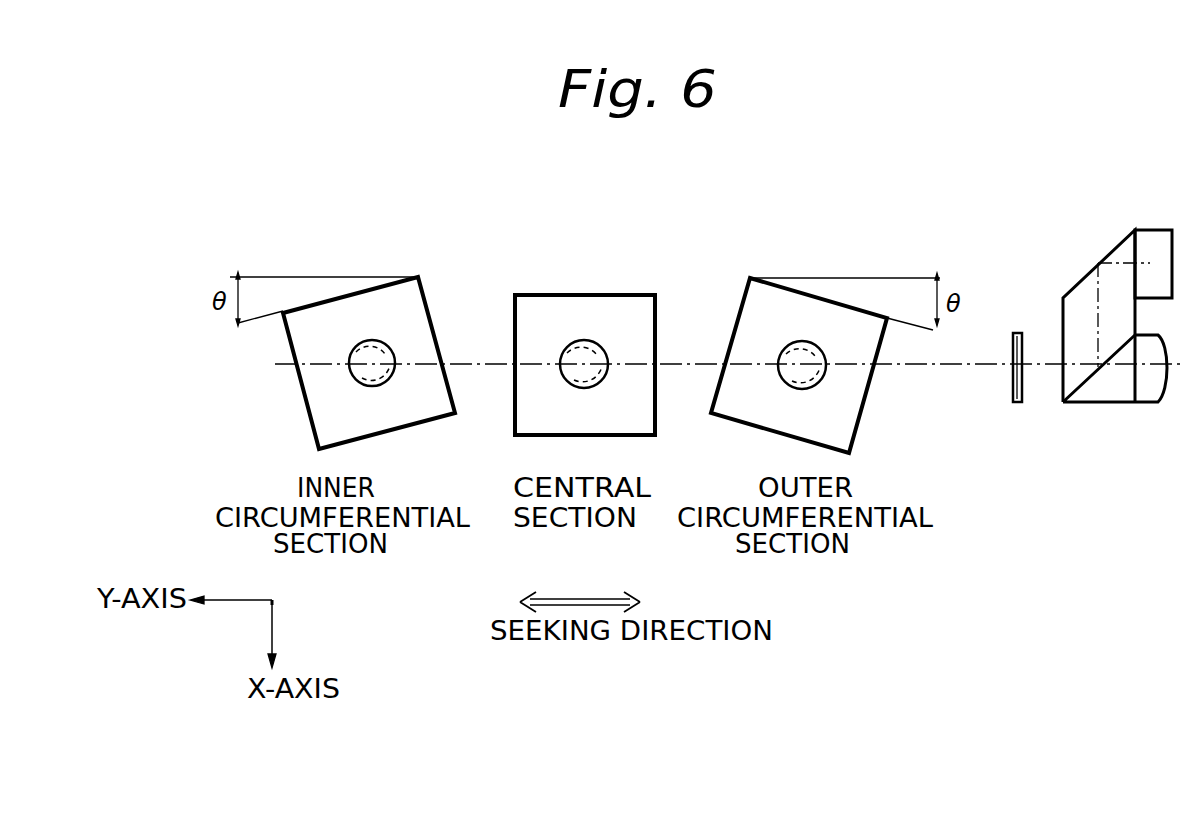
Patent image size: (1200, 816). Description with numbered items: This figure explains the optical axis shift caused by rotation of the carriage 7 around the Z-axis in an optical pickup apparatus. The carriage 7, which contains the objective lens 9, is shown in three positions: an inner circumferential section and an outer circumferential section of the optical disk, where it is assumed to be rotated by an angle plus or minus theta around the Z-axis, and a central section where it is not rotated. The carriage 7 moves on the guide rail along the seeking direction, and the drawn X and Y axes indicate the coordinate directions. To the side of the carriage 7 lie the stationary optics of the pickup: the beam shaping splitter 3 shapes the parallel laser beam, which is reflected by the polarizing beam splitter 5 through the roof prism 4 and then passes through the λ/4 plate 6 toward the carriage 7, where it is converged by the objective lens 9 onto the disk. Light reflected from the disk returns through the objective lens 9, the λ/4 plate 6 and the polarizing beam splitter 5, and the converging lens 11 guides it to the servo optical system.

The beam shaping splitter 3 is at (1155, 245).
The roof prism 4 is at (1078, 290).
The polarizing beam splitter 5 is at (1108, 393).
The λ/4 plate 6 is at (1017, 405).
The carriage 7 is at (533, 295).
The objective lens 9 is at (590, 350).
The converging lens 11 is at (1167, 395).